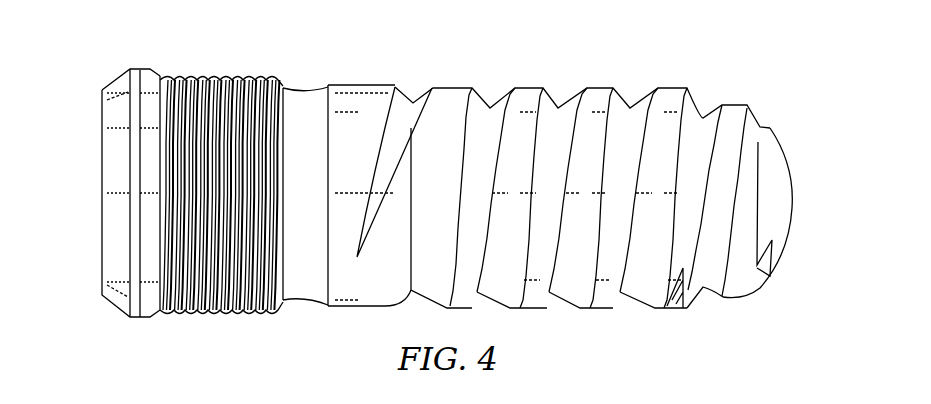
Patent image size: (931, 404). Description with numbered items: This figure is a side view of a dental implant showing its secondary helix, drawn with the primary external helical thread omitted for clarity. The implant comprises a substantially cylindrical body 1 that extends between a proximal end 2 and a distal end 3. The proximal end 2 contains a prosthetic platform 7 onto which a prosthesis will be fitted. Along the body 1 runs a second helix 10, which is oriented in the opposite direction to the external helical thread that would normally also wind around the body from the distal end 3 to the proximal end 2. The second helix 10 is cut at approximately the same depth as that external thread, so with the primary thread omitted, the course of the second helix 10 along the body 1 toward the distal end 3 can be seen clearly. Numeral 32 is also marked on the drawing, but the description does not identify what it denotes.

The body 1 is at (458, 87).
The proximal end 2 is at (102, 210).
The prosthetic platform 7 is at (104, 74).
The second helix 10 is at (632, 105).
The thread crest 32 is at (581, 88).
The distal end 3 is at (793, 182).